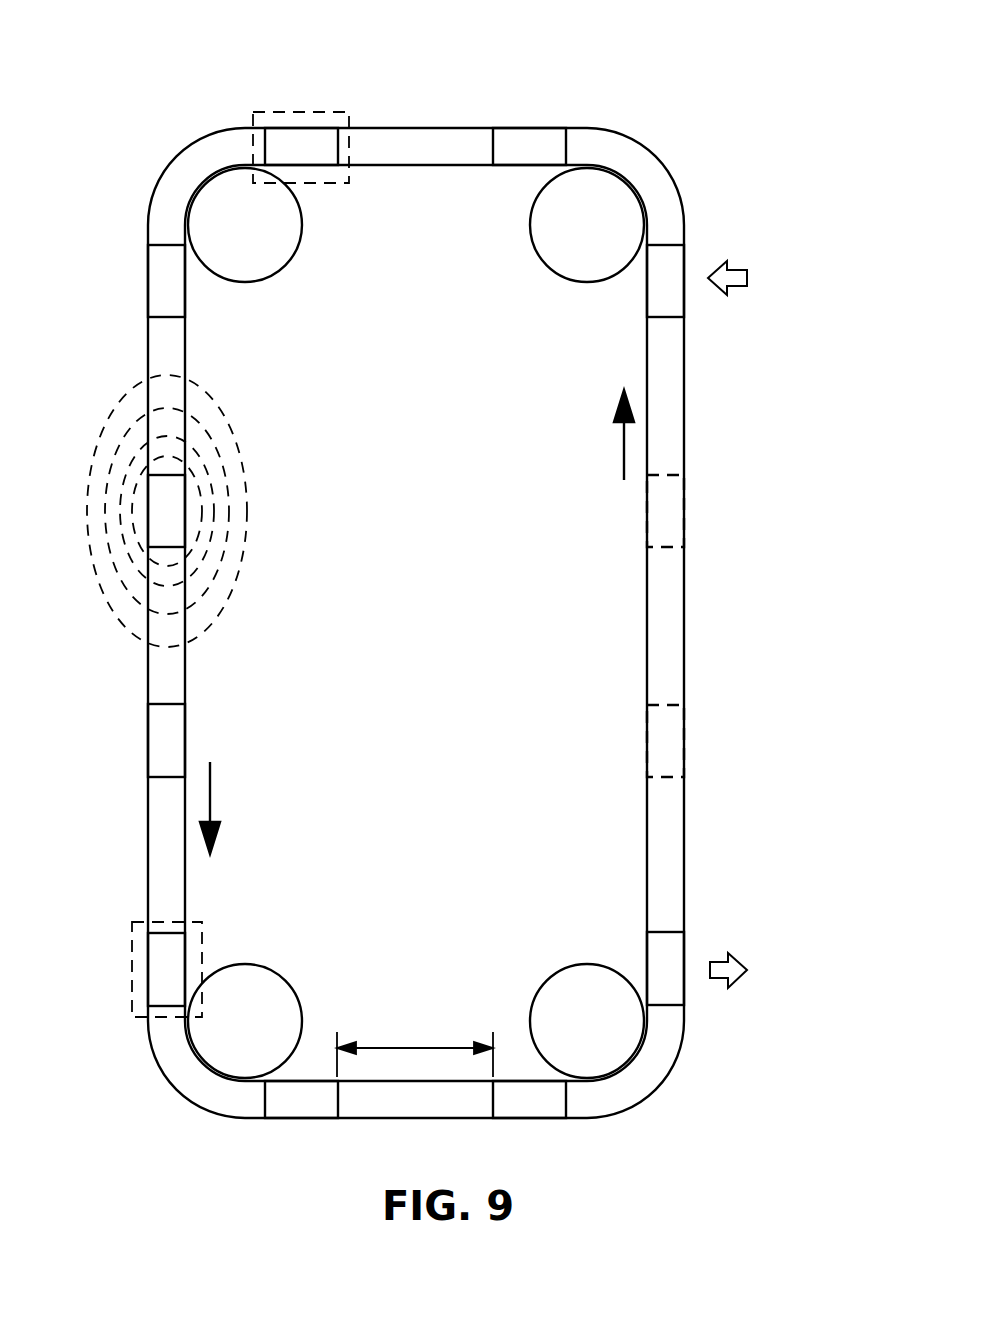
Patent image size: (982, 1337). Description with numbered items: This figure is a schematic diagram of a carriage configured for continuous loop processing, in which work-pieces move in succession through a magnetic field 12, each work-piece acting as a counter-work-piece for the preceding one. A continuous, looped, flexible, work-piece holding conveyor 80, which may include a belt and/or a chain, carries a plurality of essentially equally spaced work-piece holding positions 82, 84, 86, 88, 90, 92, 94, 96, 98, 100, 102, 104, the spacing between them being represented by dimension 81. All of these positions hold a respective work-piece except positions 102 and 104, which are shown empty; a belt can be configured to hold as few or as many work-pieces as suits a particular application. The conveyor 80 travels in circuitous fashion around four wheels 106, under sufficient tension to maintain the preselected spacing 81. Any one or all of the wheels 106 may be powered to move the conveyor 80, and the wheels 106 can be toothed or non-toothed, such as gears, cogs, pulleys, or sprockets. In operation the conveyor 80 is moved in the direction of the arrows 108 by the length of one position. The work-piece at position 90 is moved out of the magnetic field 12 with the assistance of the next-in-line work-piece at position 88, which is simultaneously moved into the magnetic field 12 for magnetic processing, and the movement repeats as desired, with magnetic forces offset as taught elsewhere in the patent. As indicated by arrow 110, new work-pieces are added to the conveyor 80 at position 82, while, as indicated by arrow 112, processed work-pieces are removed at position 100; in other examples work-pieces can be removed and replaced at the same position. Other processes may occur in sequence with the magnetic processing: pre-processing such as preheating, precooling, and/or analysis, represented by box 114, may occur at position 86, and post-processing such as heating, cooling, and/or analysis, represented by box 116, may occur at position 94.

The magnetic field 12 is at (243, 478).
The work-piece holding conveyor 80 is at (683, 847).
The dimension 81 is at (413, 1045).
The work-piece holding position 82 is at (683, 268).
The work-piece holding position 84 is at (523, 128).
The work-piece holding position 86 is at (313, 128).
The work-piece holding position 88 is at (162, 245).
The work-piece holding position 90 is at (163, 547).
The work-piece holding position 92 is at (149, 738).
The work-piece holding position 94 is at (149, 969).
The work-piece holding position 96 is at (309, 1121).
The work-piece holding position 98 is at (527, 1120).
The work-piece holding position 100 is at (683, 983).
The work-piece holding position 102 is at (684, 730).
The work-piece holding position 104 is at (684, 508).
The wheels 106 is at (215, 173).
The arrows 108 is at (623, 448).
The arrow 110 is at (733, 288).
The arrow 112 is at (742, 962).
The box 114 is at (265, 110).
The box 116 is at (202, 924).